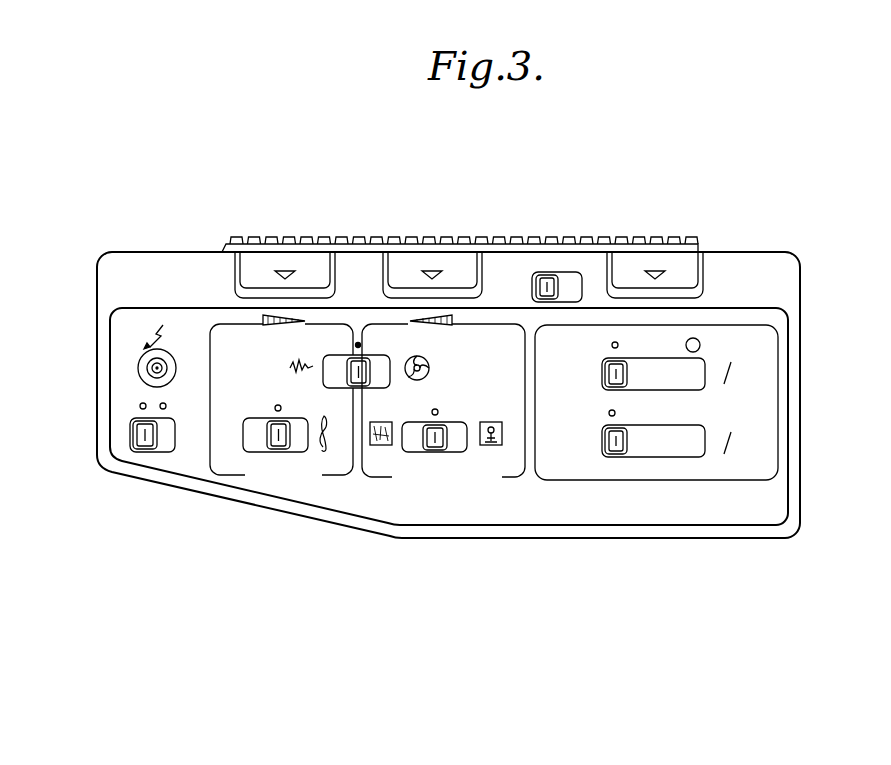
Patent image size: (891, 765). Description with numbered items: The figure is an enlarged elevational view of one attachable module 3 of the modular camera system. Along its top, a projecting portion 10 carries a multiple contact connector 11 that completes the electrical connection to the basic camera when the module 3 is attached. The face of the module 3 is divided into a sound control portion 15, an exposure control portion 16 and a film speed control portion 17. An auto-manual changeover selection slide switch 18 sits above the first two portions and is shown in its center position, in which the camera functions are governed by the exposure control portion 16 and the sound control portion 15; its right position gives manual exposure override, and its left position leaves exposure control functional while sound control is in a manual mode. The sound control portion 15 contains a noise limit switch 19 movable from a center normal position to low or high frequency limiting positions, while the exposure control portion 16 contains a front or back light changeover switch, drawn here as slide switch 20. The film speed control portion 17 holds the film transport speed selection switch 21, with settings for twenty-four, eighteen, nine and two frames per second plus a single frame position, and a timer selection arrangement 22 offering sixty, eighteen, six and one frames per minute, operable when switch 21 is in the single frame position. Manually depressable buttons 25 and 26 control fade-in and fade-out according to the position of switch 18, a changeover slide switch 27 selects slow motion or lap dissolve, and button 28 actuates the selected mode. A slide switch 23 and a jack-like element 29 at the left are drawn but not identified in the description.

The module 3 is at (788, 295).
The projecting portion 10 is at (693, 252).
The multiple contact connector 11 is at (342, 237).
The sound control portion 15 is at (336, 463).
The exposure control portion 16 is at (505, 466).
The film speed control portion 17 is at (763, 463).
The auto-manual changeover selection slide switch 18 is at (390, 365).
The noise limit switch 19 is at (290, 435).
The exposure mode switch 20 is at (442, 422).
The film transport speed selection switch 21 is at (603, 375).
The timer selection arrangement 22 is at (697, 428).
The flash switch 23 is at (130, 443).
The manually depressable button 25 is at (263, 258).
The manually depressable button 26 is at (445, 267).
The changeover slide switch 27 is at (550, 280).
The manually depressable button 28 is at (658, 262).
The flash jack 29 is at (140, 375).